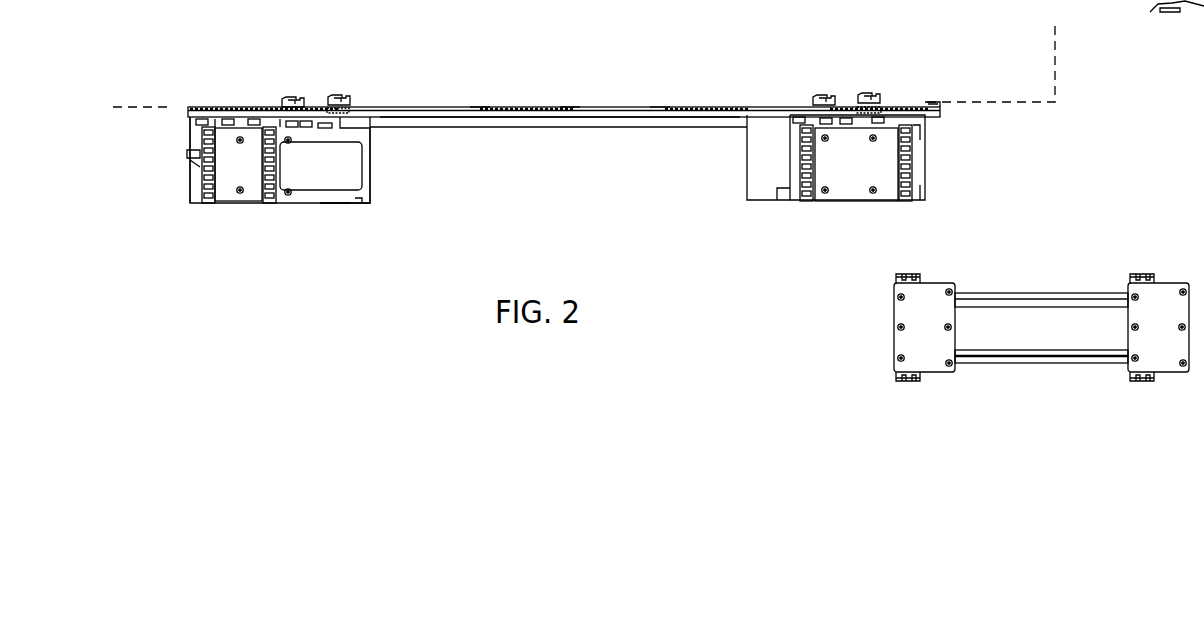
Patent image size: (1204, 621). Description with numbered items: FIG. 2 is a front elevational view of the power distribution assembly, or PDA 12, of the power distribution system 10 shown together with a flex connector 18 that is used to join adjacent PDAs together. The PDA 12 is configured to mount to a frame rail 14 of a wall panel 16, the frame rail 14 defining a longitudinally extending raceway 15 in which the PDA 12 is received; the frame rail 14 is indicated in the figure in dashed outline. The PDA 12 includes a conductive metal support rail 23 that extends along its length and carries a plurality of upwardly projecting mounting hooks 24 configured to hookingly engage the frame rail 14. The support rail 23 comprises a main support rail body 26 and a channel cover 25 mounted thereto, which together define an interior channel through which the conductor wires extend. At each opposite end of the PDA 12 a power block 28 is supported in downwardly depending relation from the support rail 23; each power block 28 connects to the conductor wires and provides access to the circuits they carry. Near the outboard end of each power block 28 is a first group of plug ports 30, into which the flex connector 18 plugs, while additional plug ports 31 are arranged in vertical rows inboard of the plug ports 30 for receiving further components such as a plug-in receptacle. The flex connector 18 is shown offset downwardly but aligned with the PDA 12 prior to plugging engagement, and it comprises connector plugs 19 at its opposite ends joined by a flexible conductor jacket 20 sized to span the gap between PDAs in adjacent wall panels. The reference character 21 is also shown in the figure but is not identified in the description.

The power distribution system 10 is at (1045, 200).
The power distribution assembly 12 is at (480, 95).
The frame rail 14 is at (1012, 100).
The raceway 15 is at (993, 158).
The wall panel 16 is at (730, 80).
The flex connector 18 is at (1041, 294).
The connector plug 19 is at (935, 283).
The conductor jacket 20 is at (998, 318).
The power module 21 is at (162, 123).
The support rail 23 is at (557, 110).
The mounting hook 24 is at (292, 97).
The channel cover 25 is at (642, 122).
The main support rail body 26 is at (660, 110).
The power block 28 is at (362, 197).
The plug port 30 is at (212, 203).
The plug port 31 is at (273, 203).